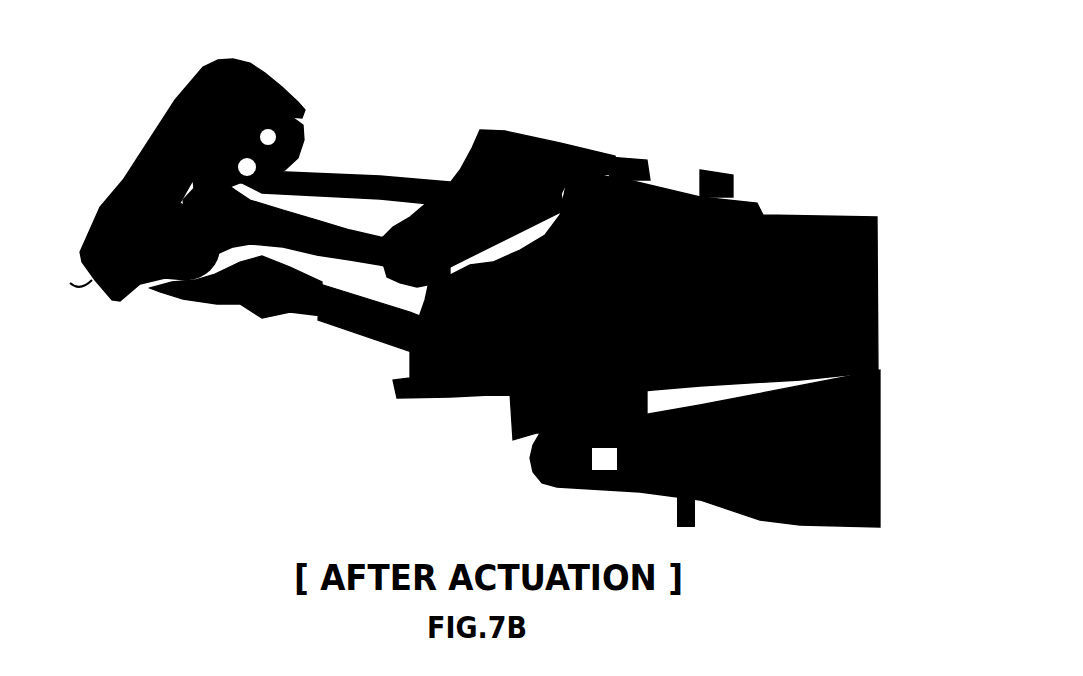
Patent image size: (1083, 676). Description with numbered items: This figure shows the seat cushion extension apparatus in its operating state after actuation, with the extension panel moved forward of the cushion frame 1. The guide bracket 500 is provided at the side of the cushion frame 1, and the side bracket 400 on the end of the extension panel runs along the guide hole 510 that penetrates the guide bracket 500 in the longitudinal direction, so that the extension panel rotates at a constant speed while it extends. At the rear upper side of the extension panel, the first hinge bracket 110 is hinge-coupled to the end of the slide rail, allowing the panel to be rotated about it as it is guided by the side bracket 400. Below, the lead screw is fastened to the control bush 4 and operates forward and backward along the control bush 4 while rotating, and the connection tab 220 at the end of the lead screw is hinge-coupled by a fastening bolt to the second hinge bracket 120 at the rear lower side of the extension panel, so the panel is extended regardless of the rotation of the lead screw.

The cushion frame 1 is at (802, 247).
The control bush 4 is at (507, 435).
The first hinge bracket 110 is at (300, 110).
The second hinge bracket 120 is at (193, 285).
The connection tab 220 is at (210, 300).
The side bracket 400 is at (303, 243).
The guide bracket 500 is at (528, 138).
The guide hole 510 is at (457, 245).